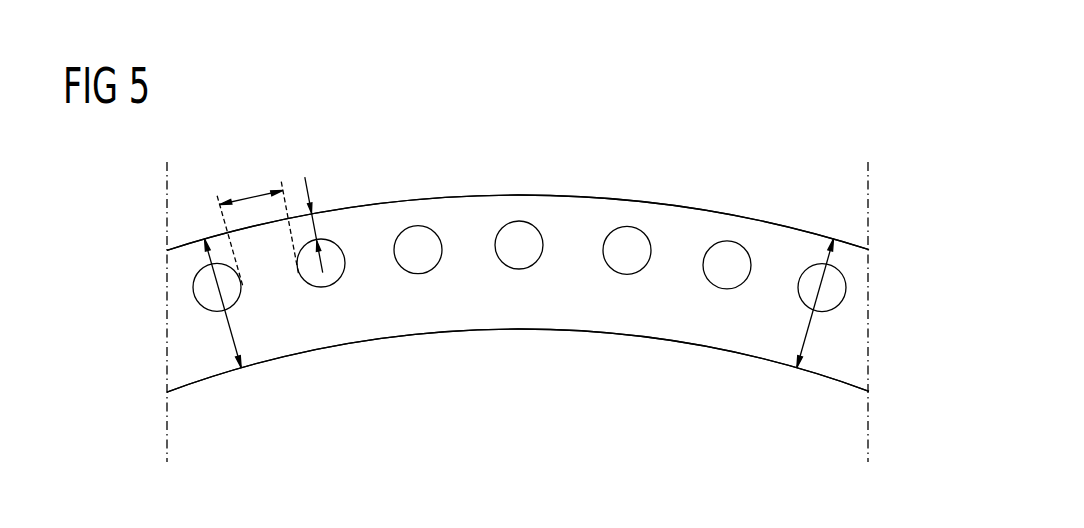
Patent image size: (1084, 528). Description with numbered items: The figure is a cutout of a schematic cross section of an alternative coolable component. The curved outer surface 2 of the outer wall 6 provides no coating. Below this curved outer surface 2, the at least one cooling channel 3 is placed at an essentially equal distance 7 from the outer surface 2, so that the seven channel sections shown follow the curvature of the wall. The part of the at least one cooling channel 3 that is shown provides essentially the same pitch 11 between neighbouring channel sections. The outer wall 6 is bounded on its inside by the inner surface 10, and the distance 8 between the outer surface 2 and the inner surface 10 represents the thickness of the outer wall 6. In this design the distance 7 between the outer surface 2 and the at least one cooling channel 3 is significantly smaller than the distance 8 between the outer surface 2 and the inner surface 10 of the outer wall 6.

The outer surface 2 is at (412, 200).
The cooling channel 3 is at (627, 226).
The outer wall 6 is at (522, 308).
The distance 7 is at (318, 240).
The distance 8 is at (233, 342).
The inner surface 10 is at (475, 331).
The pitch 11 is at (257, 196).